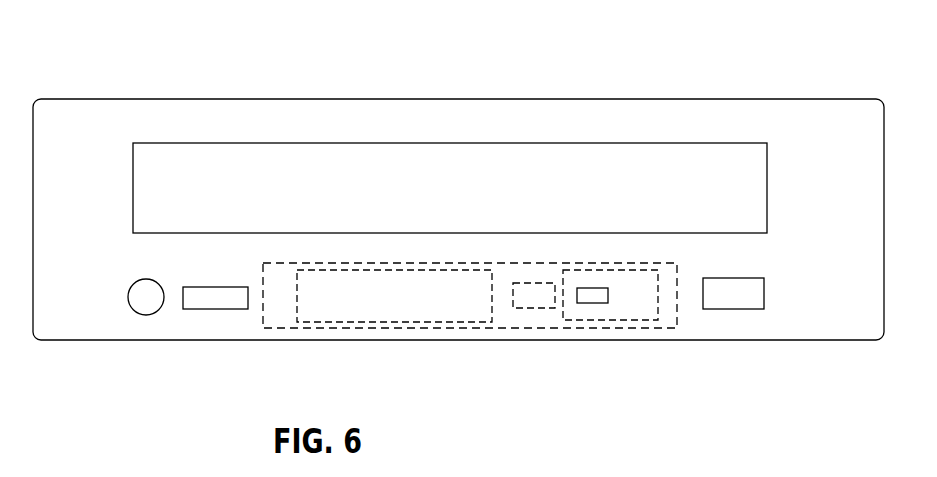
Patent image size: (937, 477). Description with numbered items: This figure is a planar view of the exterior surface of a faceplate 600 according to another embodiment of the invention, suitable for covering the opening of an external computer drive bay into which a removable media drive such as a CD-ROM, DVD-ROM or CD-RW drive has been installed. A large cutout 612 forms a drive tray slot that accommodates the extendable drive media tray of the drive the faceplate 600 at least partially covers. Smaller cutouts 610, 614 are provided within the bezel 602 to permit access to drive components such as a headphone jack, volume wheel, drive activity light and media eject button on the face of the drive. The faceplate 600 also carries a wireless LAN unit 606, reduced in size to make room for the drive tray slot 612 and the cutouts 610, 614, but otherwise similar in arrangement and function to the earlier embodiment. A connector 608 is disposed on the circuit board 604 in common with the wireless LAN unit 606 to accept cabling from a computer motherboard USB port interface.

The faceplate 600 is at (108, 72).
The bezel 602 is at (92, 300).
The circuit board 604 is at (280, 310).
The wireless LAN unit 606 is at (328, 310).
The connector 608 is at (647, 308).
The cutout 610 is at (535, 296).
The cutout 612 is at (715, 165).
The cutouts 614 is at (243, 296).